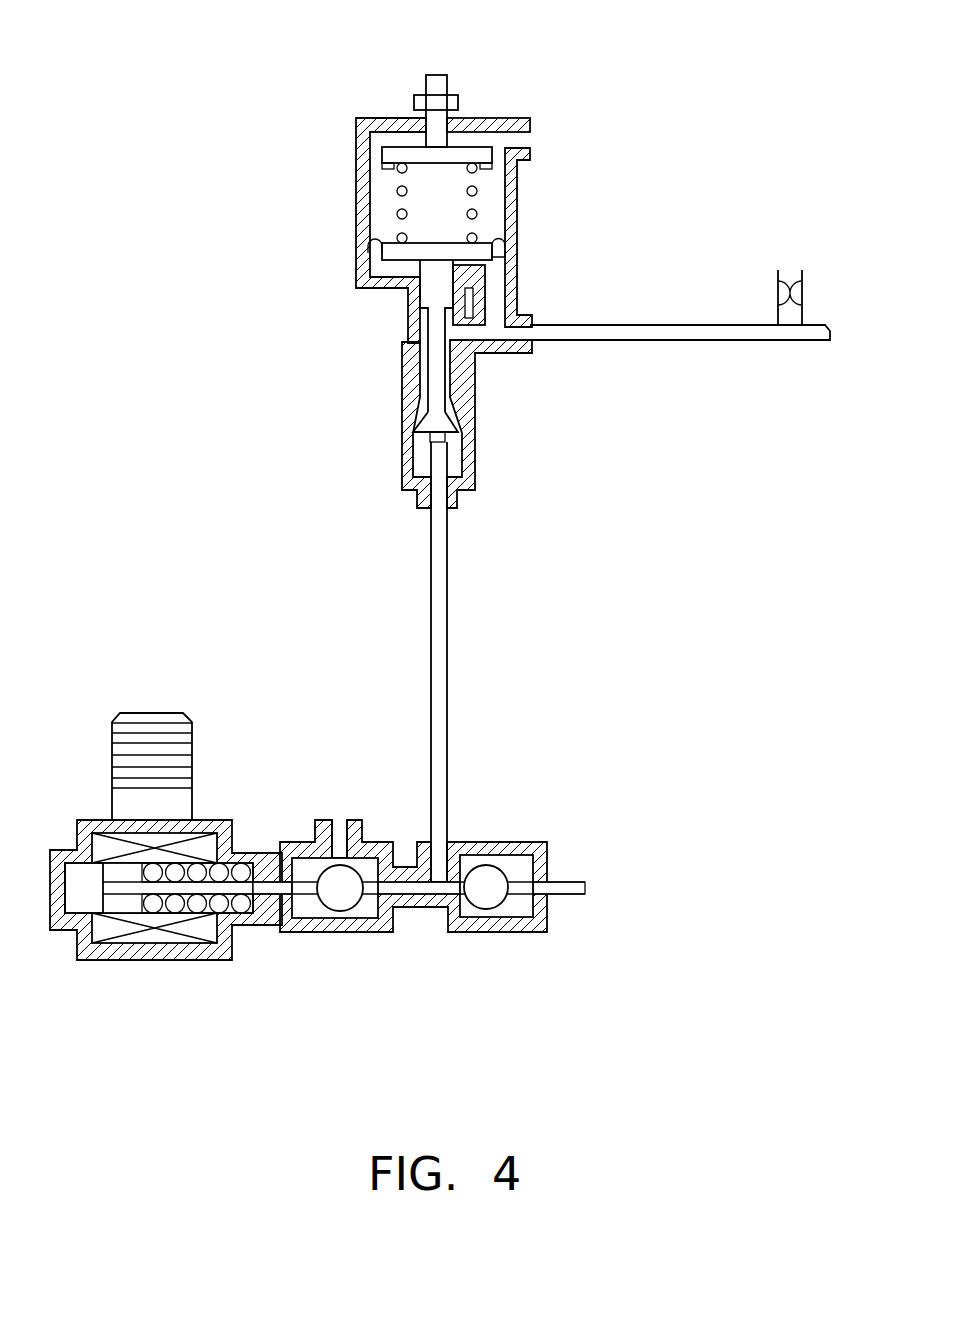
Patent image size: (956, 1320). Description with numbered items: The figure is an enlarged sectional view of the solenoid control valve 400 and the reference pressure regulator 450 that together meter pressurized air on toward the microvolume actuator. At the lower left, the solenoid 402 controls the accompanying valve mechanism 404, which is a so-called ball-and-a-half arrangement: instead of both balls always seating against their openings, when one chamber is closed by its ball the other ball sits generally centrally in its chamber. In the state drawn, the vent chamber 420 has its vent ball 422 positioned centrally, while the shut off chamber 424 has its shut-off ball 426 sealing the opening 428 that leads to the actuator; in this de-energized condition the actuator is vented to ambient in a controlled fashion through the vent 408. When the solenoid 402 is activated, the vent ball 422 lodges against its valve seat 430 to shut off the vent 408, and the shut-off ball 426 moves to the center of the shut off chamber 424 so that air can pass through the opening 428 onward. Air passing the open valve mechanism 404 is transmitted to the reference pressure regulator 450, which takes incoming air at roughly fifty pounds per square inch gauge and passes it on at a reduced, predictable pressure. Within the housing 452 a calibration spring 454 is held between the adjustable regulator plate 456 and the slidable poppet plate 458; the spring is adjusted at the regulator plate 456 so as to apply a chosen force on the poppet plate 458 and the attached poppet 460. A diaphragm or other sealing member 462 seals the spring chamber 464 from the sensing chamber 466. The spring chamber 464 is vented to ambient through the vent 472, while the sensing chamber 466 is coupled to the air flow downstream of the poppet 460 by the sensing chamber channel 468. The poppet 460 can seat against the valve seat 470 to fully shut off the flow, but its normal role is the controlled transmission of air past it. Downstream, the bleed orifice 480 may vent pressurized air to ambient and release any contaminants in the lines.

The solenoid control valve 400 is at (313, 748).
The solenoid 402 is at (200, 847).
The valve mechanism 404 is at (428, 741).
The vent 408 is at (343, 807).
The vent chamber 420 is at (303, 908).
The vent ball 422 is at (347, 898).
The shut off chamber 424 is at (513, 865).
The shut-off ball 426 is at (507, 900).
The opening 428 is at (440, 845).
The valve seat 430 is at (368, 865).
The reference pressure regulator 450 is at (322, 158).
The housing 452 is at (364, 198).
The calibration spring 454 is at (478, 190).
The adjustable regulator plate 456 is at (466, 152).
The slidable poppet plate 458 is at (483, 253).
The poppet 460 is at (442, 425).
The sealing member 462 is at (498, 238).
The spring chamber 464 is at (458, 208).
The sensing chamber 466 is at (492, 290).
The sensing chamber channel 468 is at (498, 333).
The valve seat 470 is at (413, 415).
The vent 472 is at (525, 140).
The bleed orifice 480 is at (790, 272).